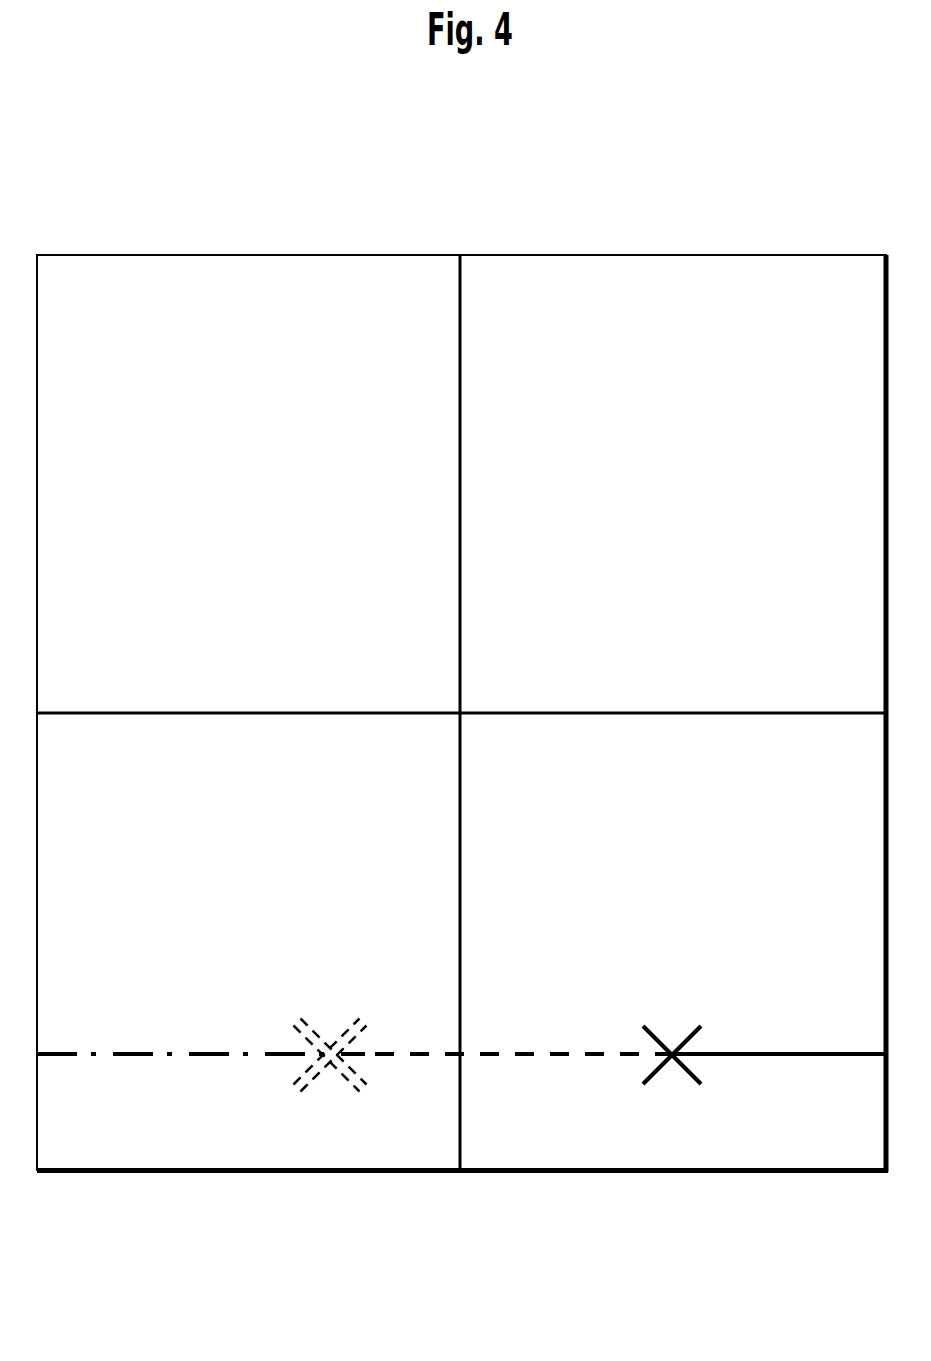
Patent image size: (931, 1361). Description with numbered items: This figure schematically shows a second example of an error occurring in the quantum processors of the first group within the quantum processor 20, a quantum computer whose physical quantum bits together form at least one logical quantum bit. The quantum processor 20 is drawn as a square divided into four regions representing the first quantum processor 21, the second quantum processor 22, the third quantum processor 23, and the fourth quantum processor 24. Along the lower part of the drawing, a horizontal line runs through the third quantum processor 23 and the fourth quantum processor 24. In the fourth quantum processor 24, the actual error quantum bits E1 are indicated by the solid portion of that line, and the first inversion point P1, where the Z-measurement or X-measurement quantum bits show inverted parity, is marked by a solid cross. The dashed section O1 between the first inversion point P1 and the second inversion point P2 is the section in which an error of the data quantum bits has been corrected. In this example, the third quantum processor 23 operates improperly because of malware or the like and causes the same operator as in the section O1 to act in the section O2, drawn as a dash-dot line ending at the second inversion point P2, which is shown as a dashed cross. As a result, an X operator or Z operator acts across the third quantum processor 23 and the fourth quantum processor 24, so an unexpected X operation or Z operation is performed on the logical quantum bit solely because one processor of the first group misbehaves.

The quantum processor 20 is at (450, 186).
The first quantum processor 21 is at (130, 341).
The second quantum processor 22 is at (547, 342).
The third quantum processor 23 is at (127, 800).
The fourth quantum processor 24 is at (545, 800).
The section O1 is at (558, 1052).
The section O2 is at (138, 1050).
The first inversion point P1 is at (671, 1000).
The second inversion point P2 is at (327, 1000).
The error quantum bits E1 is at (810, 1050).